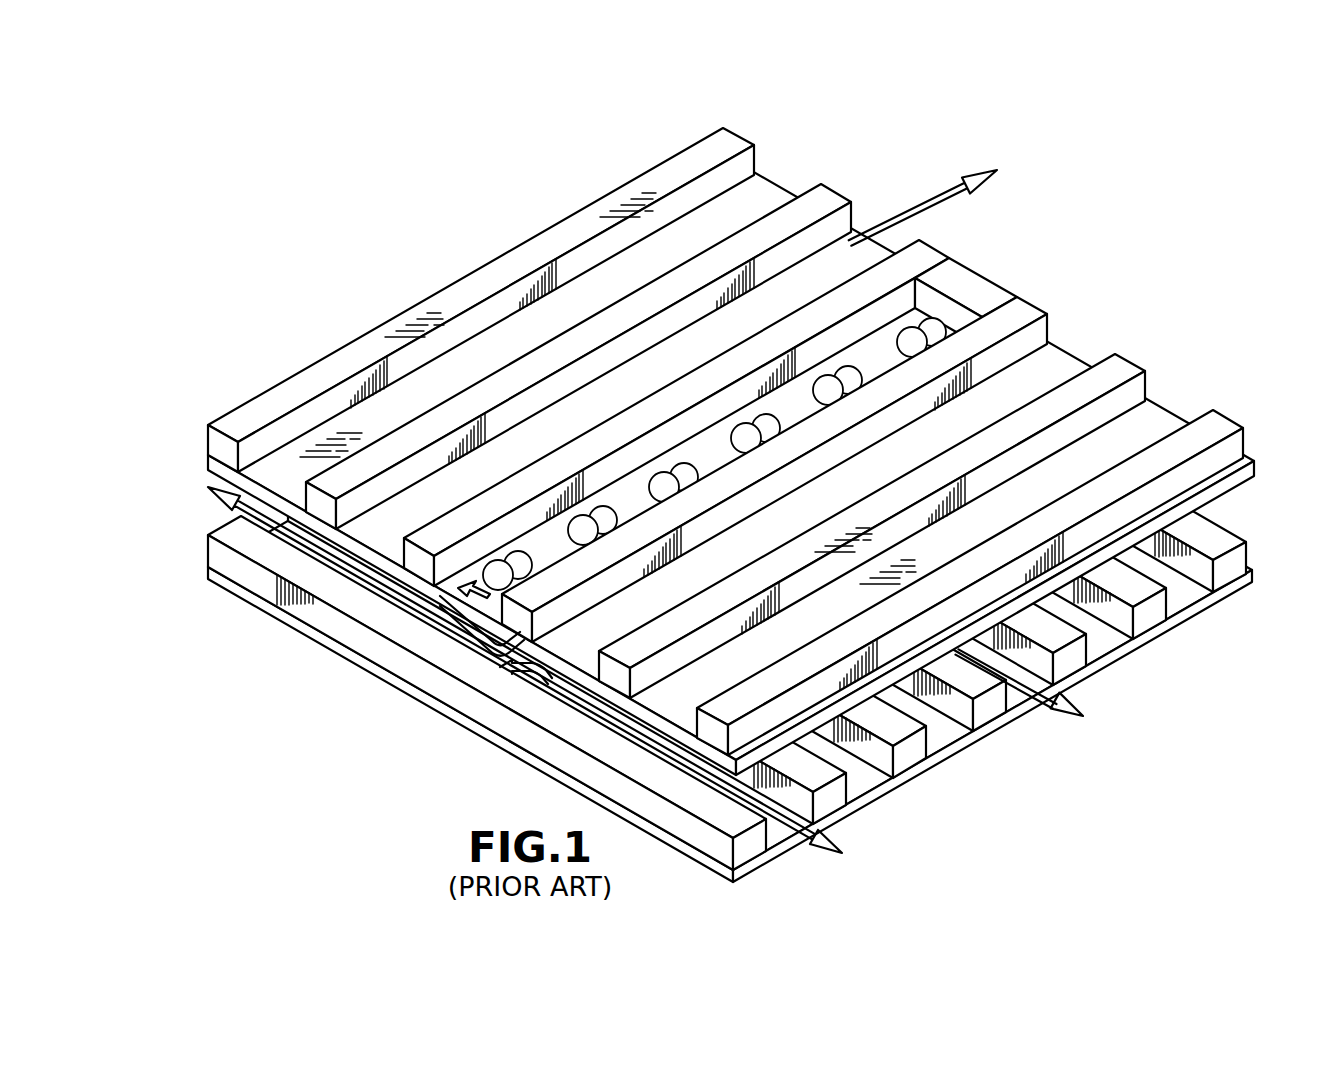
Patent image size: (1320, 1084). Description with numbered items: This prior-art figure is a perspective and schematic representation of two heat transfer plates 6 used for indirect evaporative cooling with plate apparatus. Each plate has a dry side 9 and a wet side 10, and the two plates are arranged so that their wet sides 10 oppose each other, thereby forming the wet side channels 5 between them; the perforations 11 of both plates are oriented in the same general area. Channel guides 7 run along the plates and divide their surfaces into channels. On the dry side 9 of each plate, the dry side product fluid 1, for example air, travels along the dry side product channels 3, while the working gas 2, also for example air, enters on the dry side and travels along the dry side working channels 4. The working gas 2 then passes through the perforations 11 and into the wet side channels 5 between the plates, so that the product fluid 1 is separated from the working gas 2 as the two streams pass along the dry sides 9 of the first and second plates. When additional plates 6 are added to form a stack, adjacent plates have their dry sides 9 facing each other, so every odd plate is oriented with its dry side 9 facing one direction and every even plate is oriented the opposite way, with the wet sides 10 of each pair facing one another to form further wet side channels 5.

The dry side product fluid 1 is at (937, 196).
The working gas 2 is at (480, 582).
The dry side product channels 3 is at (1058, 366).
The dry side working channels 4 is at (490, 597).
The wet side channels 5 is at (860, 780).
The plates 6 is at (1257, 541).
The channel guides 7 is at (748, 140).
The dry sides of plates 9 is at (712, 519).
The wet sides of plates 10 is at (702, 493).
The perforations 11 is at (940, 328).